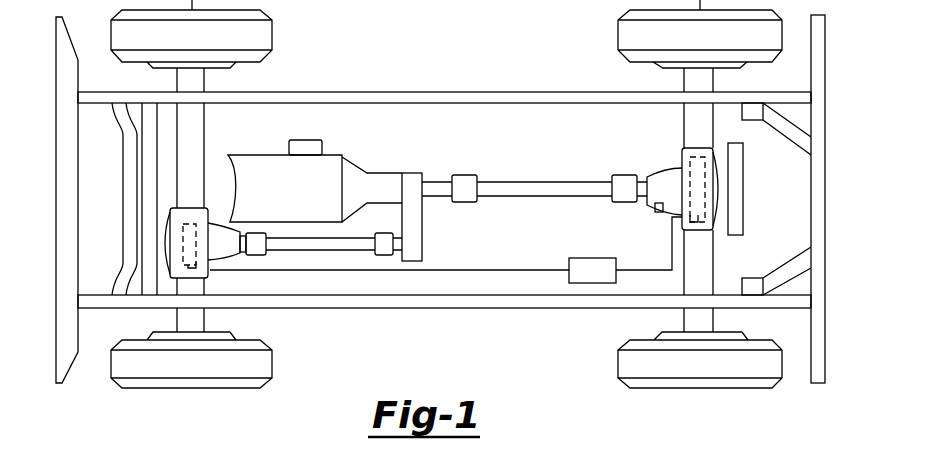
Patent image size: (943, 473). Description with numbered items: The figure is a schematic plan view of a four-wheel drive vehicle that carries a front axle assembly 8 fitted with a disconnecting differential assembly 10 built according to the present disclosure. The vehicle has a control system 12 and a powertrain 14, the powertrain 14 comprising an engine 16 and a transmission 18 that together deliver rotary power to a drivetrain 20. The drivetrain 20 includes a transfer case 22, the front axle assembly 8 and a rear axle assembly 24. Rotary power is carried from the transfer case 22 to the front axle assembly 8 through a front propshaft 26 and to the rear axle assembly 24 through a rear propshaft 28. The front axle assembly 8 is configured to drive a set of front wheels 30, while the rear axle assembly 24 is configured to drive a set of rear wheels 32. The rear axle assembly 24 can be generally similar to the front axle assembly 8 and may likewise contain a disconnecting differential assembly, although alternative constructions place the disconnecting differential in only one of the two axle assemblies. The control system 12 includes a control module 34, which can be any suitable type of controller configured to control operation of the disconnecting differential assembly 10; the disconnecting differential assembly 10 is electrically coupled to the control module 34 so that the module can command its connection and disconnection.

The front axle assembly 8 is at (179, 227).
The disconnecting differential assembly 10 is at (183, 237).
The control system 12 is at (560, 283).
The powertrain 14 is at (313, 138).
The engine 16 is at (257, 155).
The transmission 18 is at (360, 168).
The drivetrain 20 is at (508, 211).
The transfer case 22 is at (413, 177).
The rear axle assembly 24 is at (669, 133).
The front propshaft 26 is at (335, 237).
The rear propshaft 28 is at (540, 181).
The front wheels 30 is at (192, 388).
The rear wheels 32 is at (700, 388).
The control module 34 is at (578, 258).